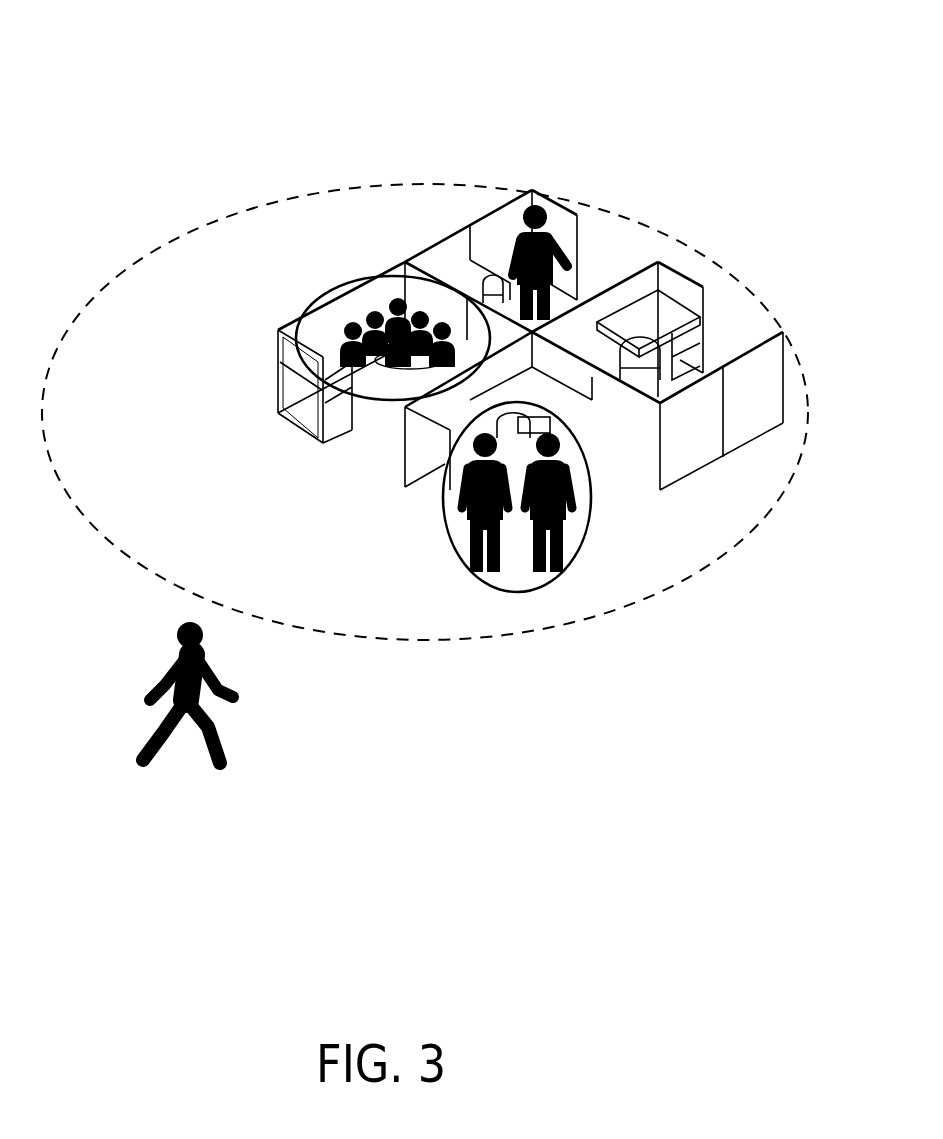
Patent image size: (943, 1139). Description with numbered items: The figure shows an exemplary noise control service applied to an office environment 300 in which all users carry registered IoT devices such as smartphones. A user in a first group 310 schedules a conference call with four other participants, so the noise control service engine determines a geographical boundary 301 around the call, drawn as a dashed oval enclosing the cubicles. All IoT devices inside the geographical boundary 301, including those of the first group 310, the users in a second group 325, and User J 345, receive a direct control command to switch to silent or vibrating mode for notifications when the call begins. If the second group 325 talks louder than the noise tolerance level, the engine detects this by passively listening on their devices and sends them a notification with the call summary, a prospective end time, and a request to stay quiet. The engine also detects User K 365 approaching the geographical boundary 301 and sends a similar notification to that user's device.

The office environment 300 is at (117, 93).
The geographical boundary 301 is at (157, 257).
The first group 310 is at (367, 283).
The second group 325 is at (548, 578).
The User J 345 is at (545, 210).
The User K 365 is at (217, 767).